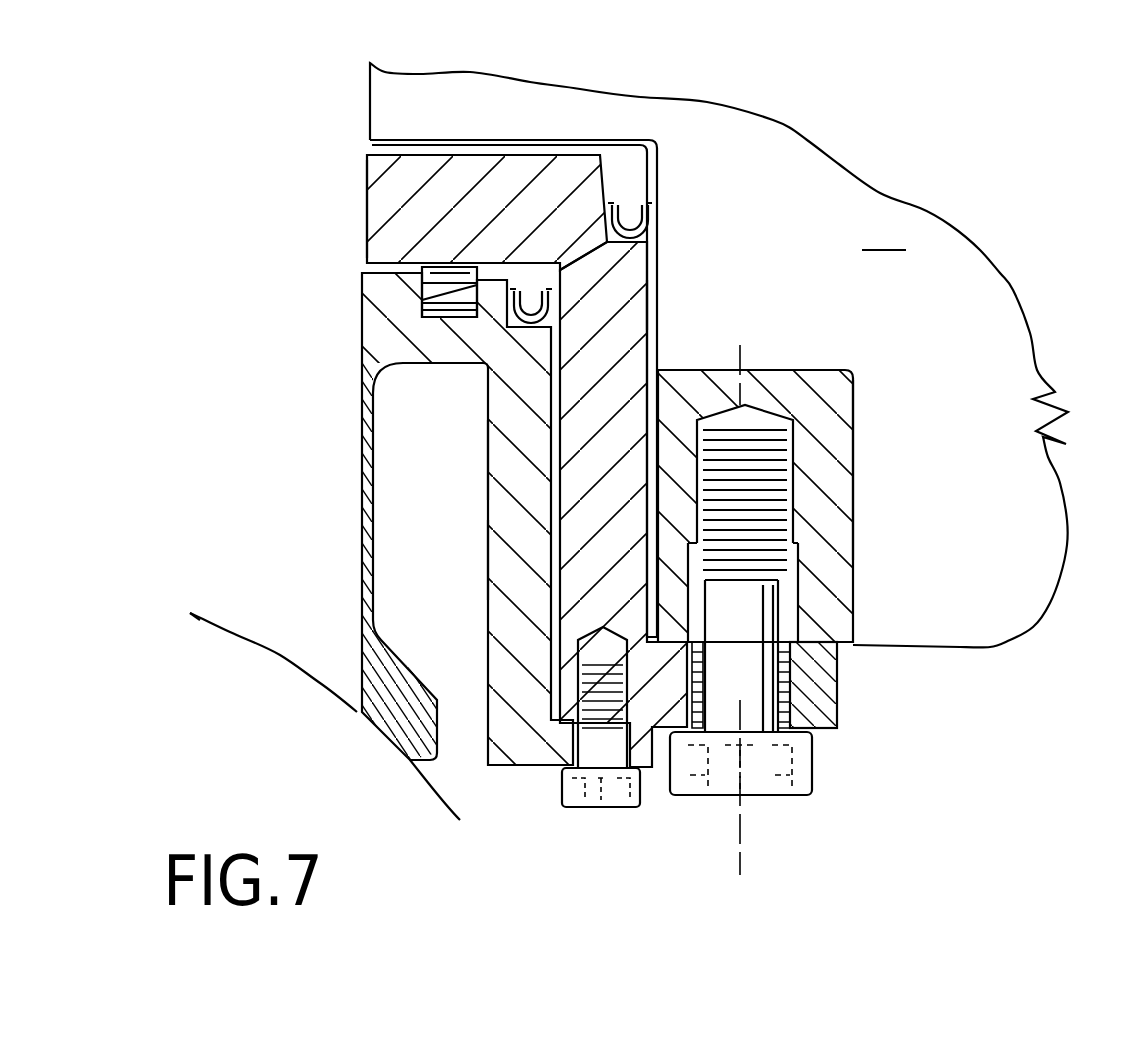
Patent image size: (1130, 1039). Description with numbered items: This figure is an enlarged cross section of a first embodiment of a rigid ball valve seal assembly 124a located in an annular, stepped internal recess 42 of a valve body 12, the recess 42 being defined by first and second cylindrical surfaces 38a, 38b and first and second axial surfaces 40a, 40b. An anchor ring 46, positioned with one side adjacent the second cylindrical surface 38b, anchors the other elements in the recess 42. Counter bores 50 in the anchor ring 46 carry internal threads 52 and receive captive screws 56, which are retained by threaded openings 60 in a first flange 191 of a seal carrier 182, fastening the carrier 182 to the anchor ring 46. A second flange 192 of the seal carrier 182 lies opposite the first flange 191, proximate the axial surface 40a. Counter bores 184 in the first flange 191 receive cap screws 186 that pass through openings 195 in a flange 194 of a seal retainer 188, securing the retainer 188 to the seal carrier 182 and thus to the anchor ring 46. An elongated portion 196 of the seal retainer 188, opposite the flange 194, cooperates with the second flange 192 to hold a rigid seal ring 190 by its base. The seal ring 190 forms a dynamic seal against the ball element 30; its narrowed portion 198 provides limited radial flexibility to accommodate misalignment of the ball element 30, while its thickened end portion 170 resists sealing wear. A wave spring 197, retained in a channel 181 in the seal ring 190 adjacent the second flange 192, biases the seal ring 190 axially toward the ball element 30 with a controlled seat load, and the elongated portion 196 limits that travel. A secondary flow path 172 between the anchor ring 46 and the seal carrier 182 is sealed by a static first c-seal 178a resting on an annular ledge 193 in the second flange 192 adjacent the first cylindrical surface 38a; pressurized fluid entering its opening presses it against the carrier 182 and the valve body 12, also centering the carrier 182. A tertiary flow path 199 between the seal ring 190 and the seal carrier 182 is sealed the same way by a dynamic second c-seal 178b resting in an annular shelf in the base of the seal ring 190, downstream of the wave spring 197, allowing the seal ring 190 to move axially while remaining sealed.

The valve body 12 is at (884, 233).
The ball element 30 is at (303, 673).
The first cylindrical surface 38a is at (660, 275).
The second cylindrical surface 38b is at (853, 470).
The first axial surface 40a is at (553, 140).
The second axial surface 40b is at (790, 372).
The internal recess 42 is at (440, 140).
The anchor ring 46 is at (835, 440).
The counter bore 50 is at (770, 405).
The internal threads 52 is at (795, 515).
The captive screw 56 is at (748, 645).
The threaded opening 60 is at (793, 688).
The rigid ball valve seal assembly 124a is at (960, 160).
The thickened end portion 170 is at (357, 640).
The secondary flow path 172 is at (398, 140).
The first c-seal 178a is at (657, 220).
The second c-seal 178b is at (555, 290).
The channel 181 is at (430, 320).
The seal carrier 182 is at (372, 218).
The counter bore 184 is at (587, 648).
The cap screw 186 is at (640, 790).
The seal retainer 188 is at (510, 470).
The rigid seal ring 190 is at (377, 340).
The first flange 191 is at (826, 725).
The second flange 192 is at (397, 187).
The annular ledge 193 is at (610, 243).
The flange 194 is at (538, 752).
The opening 195 is at (573, 765).
The elongated portion 196 is at (512, 565).
The wave spring 197 is at (462, 268).
The narrowed portion 198 is at (362, 470).
The tertiary flow path 199 is at (367, 268).